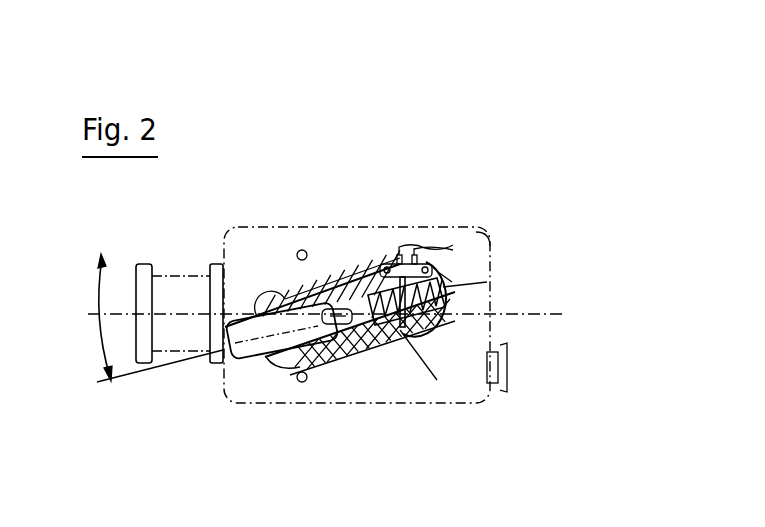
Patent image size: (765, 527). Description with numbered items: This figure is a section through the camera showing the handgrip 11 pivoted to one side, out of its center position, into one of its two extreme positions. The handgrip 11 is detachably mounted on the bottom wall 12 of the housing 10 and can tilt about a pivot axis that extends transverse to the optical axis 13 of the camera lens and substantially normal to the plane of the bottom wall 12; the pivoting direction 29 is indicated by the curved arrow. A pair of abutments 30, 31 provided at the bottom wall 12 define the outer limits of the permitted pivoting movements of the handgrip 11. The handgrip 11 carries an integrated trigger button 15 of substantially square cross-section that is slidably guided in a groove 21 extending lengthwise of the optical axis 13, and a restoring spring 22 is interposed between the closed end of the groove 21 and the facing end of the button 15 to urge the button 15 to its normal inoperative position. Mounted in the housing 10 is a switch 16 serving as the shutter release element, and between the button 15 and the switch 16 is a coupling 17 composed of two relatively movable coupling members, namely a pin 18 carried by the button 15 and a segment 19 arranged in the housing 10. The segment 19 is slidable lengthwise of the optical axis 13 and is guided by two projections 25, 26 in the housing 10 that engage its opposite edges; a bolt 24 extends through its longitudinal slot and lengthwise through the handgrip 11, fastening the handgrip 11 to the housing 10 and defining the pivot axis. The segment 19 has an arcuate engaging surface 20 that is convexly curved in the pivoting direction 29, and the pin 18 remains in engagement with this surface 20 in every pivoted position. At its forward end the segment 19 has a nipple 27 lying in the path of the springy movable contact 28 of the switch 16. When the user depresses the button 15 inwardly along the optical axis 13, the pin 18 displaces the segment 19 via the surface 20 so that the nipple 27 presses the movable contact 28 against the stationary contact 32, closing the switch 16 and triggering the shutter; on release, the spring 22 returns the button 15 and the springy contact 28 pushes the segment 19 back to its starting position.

The housing 10 is at (482, 400).
The handgrip 11 is at (265, 357).
The bottom wall 12 is at (470, 256).
The optical axis 13 is at (540, 314).
The trigger button 15 is at (232, 366).
The switch 16 is at (407, 250).
The coupling 17 is at (312, 345).
The pin 18 is at (272, 357).
The segment 19 is at (300, 300).
The arcuate engaging surface 20 is at (290, 308).
The groove 21 is at (366, 290).
The restoring spring 22 is at (427, 287).
The bolt 24 is at (437, 355).
The projection 25 is at (342, 262).
The projection 26 is at (345, 335).
The nipple 27 is at (445, 352).
The movable contact 28 is at (437, 380).
The pivoting direction 29 is at (95, 337).
The abutment 30 is at (299, 249).
The abutment 31 is at (298, 372).
The stationary contact 32 is at (455, 278).